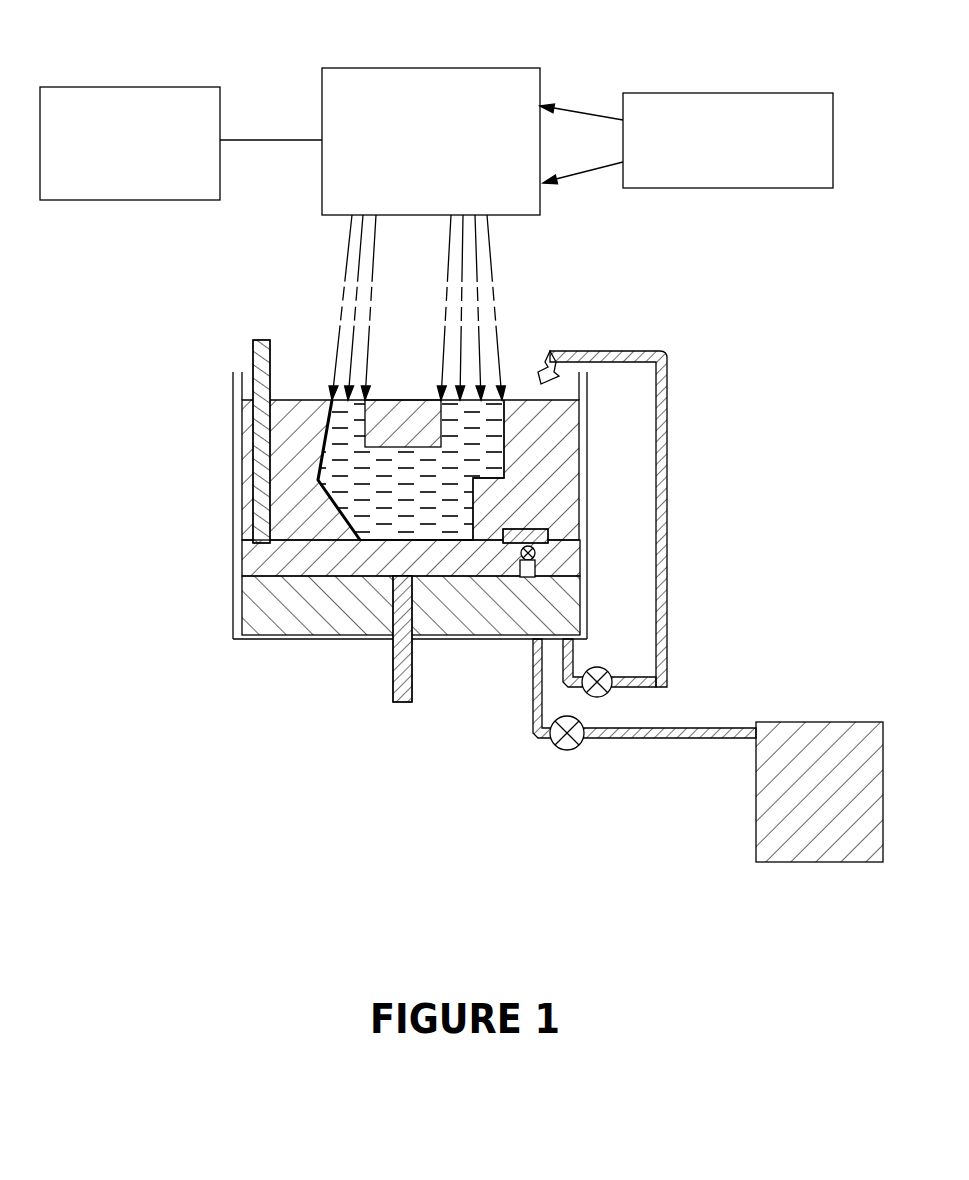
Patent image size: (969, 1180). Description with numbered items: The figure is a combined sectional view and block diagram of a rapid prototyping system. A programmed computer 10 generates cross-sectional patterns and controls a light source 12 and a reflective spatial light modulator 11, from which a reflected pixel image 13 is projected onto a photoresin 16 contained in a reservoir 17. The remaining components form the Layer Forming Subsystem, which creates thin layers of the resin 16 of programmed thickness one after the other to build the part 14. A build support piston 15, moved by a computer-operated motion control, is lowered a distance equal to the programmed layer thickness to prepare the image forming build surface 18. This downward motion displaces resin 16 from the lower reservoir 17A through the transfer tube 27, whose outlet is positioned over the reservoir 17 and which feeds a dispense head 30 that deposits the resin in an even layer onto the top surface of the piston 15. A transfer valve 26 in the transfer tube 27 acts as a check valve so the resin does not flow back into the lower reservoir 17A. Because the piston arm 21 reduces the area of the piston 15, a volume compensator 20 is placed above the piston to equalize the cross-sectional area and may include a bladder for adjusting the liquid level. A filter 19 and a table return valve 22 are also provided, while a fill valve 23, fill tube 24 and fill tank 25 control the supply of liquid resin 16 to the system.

The programmed computer 10 is at (150, 87).
The reflective spatial light modulator 11 is at (425, 68).
The light source 12 is at (723, 93).
The reflected pixel image 13 is at (493, 273).
The part 14 is at (317, 463).
The build support piston 15 is at (265, 557).
The photoresin 16 is at (293, 413).
The reservoir 17 is at (233, 457).
The lower reservoir 17A is at (300, 633).
The image forming build surface 18 is at (325, 397).
The filter 19 is at (550, 535).
The volume compensator 20 is at (262, 518).
The piston arm 21 is at (393, 678).
The table return valve 22 is at (533, 570).
The fill valve 23 is at (565, 749).
The fill tube 24 is at (693, 740).
The fill tank 25 is at (830, 727).
The transfer valve 26 is at (602, 668).
The transfer tube 27 is at (667, 513).
The dispense head 30 is at (565, 390).